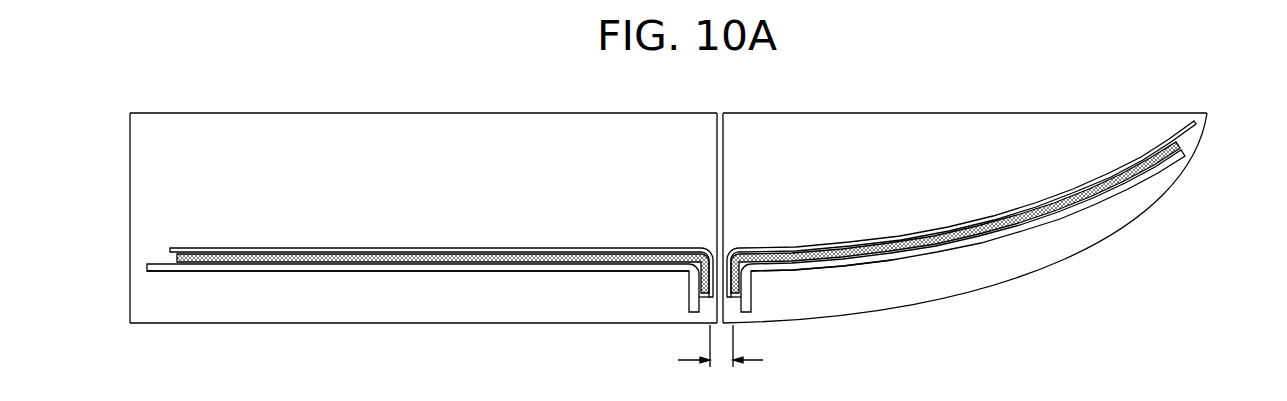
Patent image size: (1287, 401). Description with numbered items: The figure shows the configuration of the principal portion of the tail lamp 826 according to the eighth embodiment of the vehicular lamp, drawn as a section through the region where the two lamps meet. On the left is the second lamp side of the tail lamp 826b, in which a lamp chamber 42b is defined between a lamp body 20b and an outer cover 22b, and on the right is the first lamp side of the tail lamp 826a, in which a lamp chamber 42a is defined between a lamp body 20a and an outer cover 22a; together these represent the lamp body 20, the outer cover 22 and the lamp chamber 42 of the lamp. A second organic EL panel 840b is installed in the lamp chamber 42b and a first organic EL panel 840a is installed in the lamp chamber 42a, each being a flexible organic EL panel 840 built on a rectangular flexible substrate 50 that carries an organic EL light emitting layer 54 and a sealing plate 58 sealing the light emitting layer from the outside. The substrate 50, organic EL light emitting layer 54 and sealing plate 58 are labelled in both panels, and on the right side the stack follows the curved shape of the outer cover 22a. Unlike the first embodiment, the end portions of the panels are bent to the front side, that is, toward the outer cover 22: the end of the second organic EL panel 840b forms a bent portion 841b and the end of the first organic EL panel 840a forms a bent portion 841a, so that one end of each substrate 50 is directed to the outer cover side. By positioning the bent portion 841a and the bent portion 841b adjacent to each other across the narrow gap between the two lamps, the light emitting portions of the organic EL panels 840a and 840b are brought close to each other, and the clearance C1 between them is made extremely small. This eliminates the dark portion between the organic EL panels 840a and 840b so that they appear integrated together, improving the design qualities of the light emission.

The tail lamp 826 is at (685, 208).
The tail lamp (trunk side) 826b is at (356, 100).
The tail lamp (body side) 826a is at (1083, 100).
The lamp body 20 is at (423, 90).
The lamp body 20b is at (541, 113).
The lamp body 20a is at (917, 113).
The outer cover 22 is at (423, 349).
The outer cover 22b is at (224, 324).
The outer cover 22a is at (1093, 252).
The lamp chamber 42 is at (423, 218).
The lamp chamber 42b is at (345, 175).
The lamp chamber 42a is at (919, 175).
The substrate 50 is at (472, 272).
The organic EL light emitting layer 54 is at (445, 263).
The sealing plate 58 is at (412, 252).
The organic EL panel 840 is at (526, 316).
The second organic EL panel 840b is at (535, 272).
The first organic EL panel 840a is at (833, 268).
The bent portion 841b is at (699, 250).
The bent portion 841a is at (742, 249).
The clearance C1 is at (720, 358).